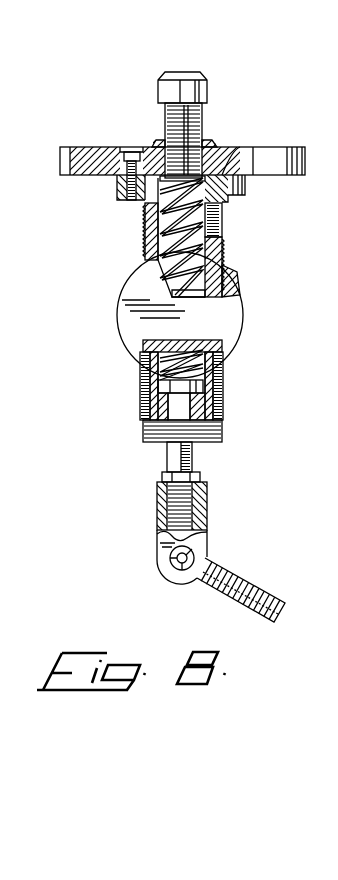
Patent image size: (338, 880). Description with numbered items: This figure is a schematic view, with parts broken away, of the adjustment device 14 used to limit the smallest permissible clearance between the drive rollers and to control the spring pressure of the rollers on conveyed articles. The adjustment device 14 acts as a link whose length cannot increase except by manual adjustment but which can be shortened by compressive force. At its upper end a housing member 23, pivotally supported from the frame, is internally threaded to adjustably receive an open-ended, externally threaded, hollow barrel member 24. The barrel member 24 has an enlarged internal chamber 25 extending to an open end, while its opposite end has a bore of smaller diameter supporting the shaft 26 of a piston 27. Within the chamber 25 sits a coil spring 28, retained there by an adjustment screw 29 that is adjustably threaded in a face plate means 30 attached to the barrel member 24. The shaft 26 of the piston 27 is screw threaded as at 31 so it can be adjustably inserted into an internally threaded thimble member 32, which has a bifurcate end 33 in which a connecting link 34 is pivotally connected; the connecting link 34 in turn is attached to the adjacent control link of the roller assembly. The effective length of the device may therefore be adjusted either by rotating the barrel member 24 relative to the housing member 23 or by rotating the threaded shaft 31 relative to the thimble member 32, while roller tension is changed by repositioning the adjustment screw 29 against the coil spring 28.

The adjustment device 14 is at (120, 260).
The housing member 23 is at (230, 323).
The barrel member 24 is at (220, 253).
The internal chamber 25 is at (198, 238).
The shaft 26 is at (183, 412).
The piston 27 is at (200, 383).
The coil spring 28 is at (200, 270).
The adjustment screw 29 is at (195, 88).
The face plate means 30 is at (240, 160).
The screw threaded portion of piston shaft 31 is at (190, 463).
The thimble member 32 is at (200, 507).
The bifurcate end 33 is at (165, 558).
The connecting link 34 is at (243, 580).